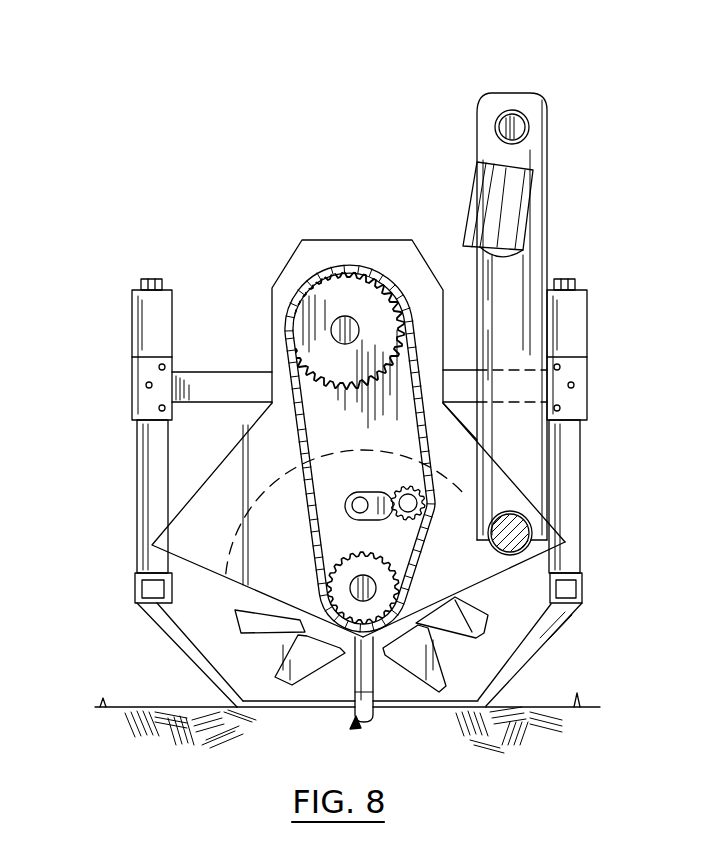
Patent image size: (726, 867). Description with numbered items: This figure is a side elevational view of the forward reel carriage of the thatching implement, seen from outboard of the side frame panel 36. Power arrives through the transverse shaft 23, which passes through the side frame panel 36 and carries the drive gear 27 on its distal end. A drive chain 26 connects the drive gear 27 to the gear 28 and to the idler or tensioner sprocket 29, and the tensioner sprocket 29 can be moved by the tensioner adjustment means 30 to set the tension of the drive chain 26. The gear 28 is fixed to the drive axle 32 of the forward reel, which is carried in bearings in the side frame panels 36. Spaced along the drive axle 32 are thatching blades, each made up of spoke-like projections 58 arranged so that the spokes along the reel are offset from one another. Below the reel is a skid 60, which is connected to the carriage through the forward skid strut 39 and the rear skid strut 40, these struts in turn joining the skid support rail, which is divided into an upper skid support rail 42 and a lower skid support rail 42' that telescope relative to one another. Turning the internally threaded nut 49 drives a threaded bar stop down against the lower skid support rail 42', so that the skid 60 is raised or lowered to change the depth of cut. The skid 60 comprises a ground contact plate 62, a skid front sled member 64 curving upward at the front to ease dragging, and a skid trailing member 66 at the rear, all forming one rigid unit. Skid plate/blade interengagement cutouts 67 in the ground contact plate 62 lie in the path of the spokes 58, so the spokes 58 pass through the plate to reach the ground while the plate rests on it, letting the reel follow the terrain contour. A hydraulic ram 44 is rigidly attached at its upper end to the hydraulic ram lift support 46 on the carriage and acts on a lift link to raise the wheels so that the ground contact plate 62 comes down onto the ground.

The transverse shaft 23 is at (354, 322).
The drive chain 26 is at (287, 337).
The drive gear 27 is at (337, 288).
The gear 28 is at (378, 648).
The idler or tensioner sprocket 29 is at (465, 588).
The tensioner adjustment means 30 is at (364, 498).
The drive axle 32 is at (310, 637).
The side frame panel 36 is at (202, 483).
The forward skid strut 39 is at (458, 385).
The rear skid strut 40 is at (215, 372).
The upper skid support rail 42 is at (355, 355).
The lower skid support rail 42' is at (358, 496).
The hydraulic ram 44 is at (530, 188).
The hydraulic ram lift support 46 is at (529, 128).
The internally threaded nut 49 is at (148, 278).
The spoke-like projections 58 is at (443, 670).
The skid 60 is at (548, 635).
The ground contact plate 62 is at (310, 705).
The skid front sled member 64 is at (558, 632).
The skid trailing member 66 is at (170, 640).
The skid plate/blade interengagement cutouts 67 is at (356, 726).